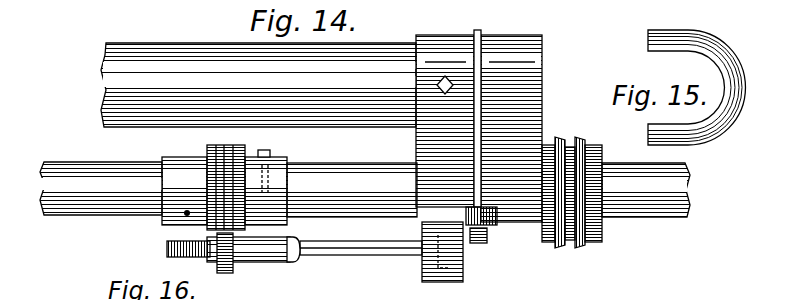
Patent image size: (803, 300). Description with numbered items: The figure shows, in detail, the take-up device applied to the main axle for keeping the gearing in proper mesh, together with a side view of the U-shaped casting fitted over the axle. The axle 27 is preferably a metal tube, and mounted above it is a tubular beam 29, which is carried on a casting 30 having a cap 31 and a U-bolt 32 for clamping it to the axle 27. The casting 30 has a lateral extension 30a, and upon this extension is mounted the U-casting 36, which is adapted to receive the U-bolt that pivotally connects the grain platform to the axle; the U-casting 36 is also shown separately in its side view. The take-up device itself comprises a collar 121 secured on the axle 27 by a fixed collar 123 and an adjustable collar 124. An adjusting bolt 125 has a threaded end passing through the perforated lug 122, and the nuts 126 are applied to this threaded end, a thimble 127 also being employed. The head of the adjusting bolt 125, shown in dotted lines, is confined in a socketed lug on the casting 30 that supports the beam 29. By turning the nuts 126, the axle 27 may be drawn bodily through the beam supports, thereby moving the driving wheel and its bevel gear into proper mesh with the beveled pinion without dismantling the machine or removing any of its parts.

In FIG. 14, the axle 27 is at (114, 176).
In FIG. 14, the tubular beam 29 is at (180, 43).
In FIG. 14, the casting 30 is at (540, 115).
In FIG. 14, the lateral extension 30a is at (604, 231).
In FIG. 14, the cap 31 is at (542, 58).
In FIG. 14, the U-bolt 32 is at (478, 32).
In FIG. 14, the U-casting 36 is at (578, 141).
In FIG. 15, the U-casting 36 is at (686, 31).
In FIG. 14, the collar 121 is at (228, 152).
In FIG. 14, the perforated lug 122 is at (226, 266).
In FIG. 14, the fixed collar 123 is at (277, 178).
In FIG. 14, the adjustable collar 124 is at (178, 207).
In FIG. 14, the adjusting bolt 125 is at (384, 255).
In FIG. 14, the nuts 126 is at (300, 257).
In FIG. 14, the thimble 127 is at (282, 242).